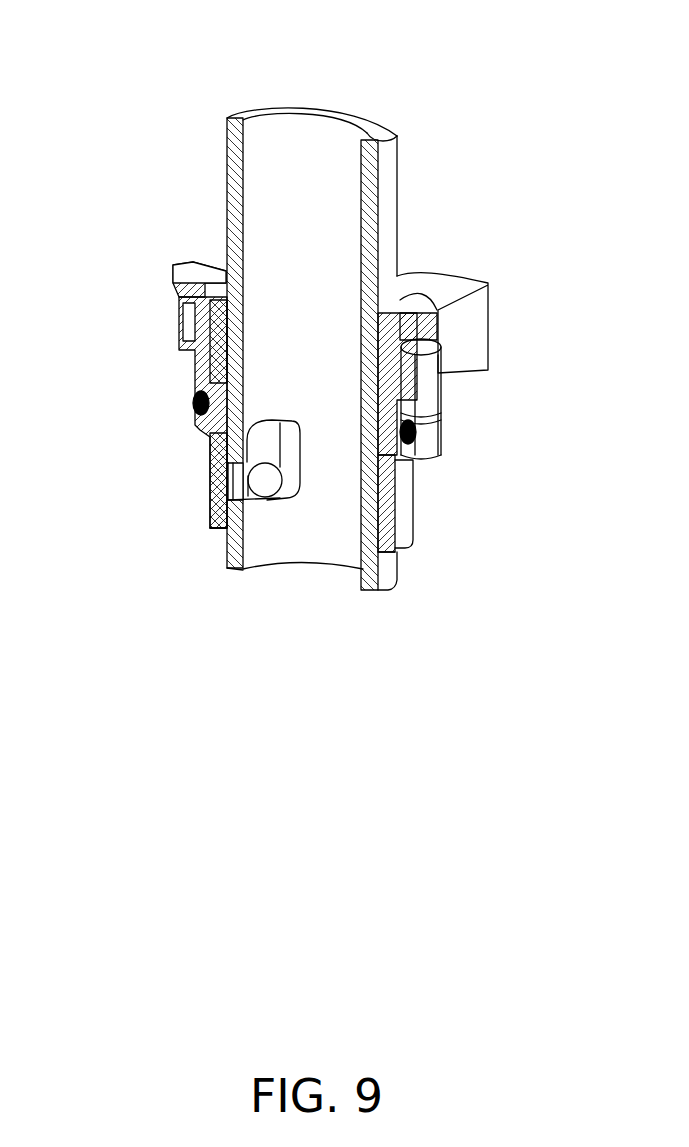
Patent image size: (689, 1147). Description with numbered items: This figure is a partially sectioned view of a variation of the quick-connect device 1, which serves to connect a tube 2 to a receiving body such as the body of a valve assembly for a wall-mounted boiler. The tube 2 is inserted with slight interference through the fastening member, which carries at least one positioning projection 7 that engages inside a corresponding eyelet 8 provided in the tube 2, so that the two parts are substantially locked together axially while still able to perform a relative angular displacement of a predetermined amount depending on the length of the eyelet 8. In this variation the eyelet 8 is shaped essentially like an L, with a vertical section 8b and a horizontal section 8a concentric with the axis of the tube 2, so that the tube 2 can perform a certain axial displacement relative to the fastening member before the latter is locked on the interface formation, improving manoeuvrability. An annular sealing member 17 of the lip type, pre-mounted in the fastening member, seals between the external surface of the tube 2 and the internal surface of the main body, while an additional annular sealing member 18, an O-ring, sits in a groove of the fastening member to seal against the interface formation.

The quick-connect device 1 is at (193, 201).
The tube 2 is at (303, 142).
The positioning projection 7 is at (288, 500).
The eyelet 8 is at (288, 411).
The horizontal section of eyelet 8a is at (207, 497).
The vertical section of eyelet 8b is at (212, 470).
The annular sealing member 17 is at (180, 338).
The additional annular sealing member 18 is at (442, 420).